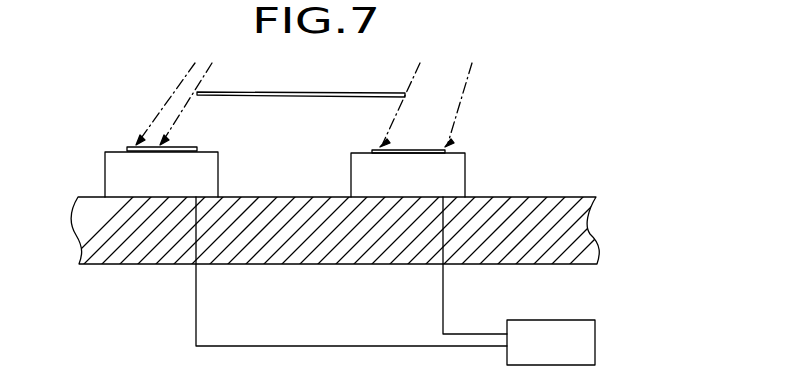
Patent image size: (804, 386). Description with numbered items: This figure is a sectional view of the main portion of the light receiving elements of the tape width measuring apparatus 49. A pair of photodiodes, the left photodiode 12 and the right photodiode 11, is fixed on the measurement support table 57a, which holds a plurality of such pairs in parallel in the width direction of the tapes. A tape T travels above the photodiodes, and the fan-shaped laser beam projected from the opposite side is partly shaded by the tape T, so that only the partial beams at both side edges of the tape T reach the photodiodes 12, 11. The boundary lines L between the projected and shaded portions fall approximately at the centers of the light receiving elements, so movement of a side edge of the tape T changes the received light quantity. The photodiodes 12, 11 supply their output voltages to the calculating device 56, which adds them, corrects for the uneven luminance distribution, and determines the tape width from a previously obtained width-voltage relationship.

The tape width measuring apparatus 49 is at (577, 98).
The measurement support table 57a is at (584, 224).
The left photodiode 12 is at (118, 187).
The right photodiode 11 is at (458, 191).
The calculating device 56 is at (582, 338).
The tape T is at (304, 91).
The boundary line L is at (158, 152).